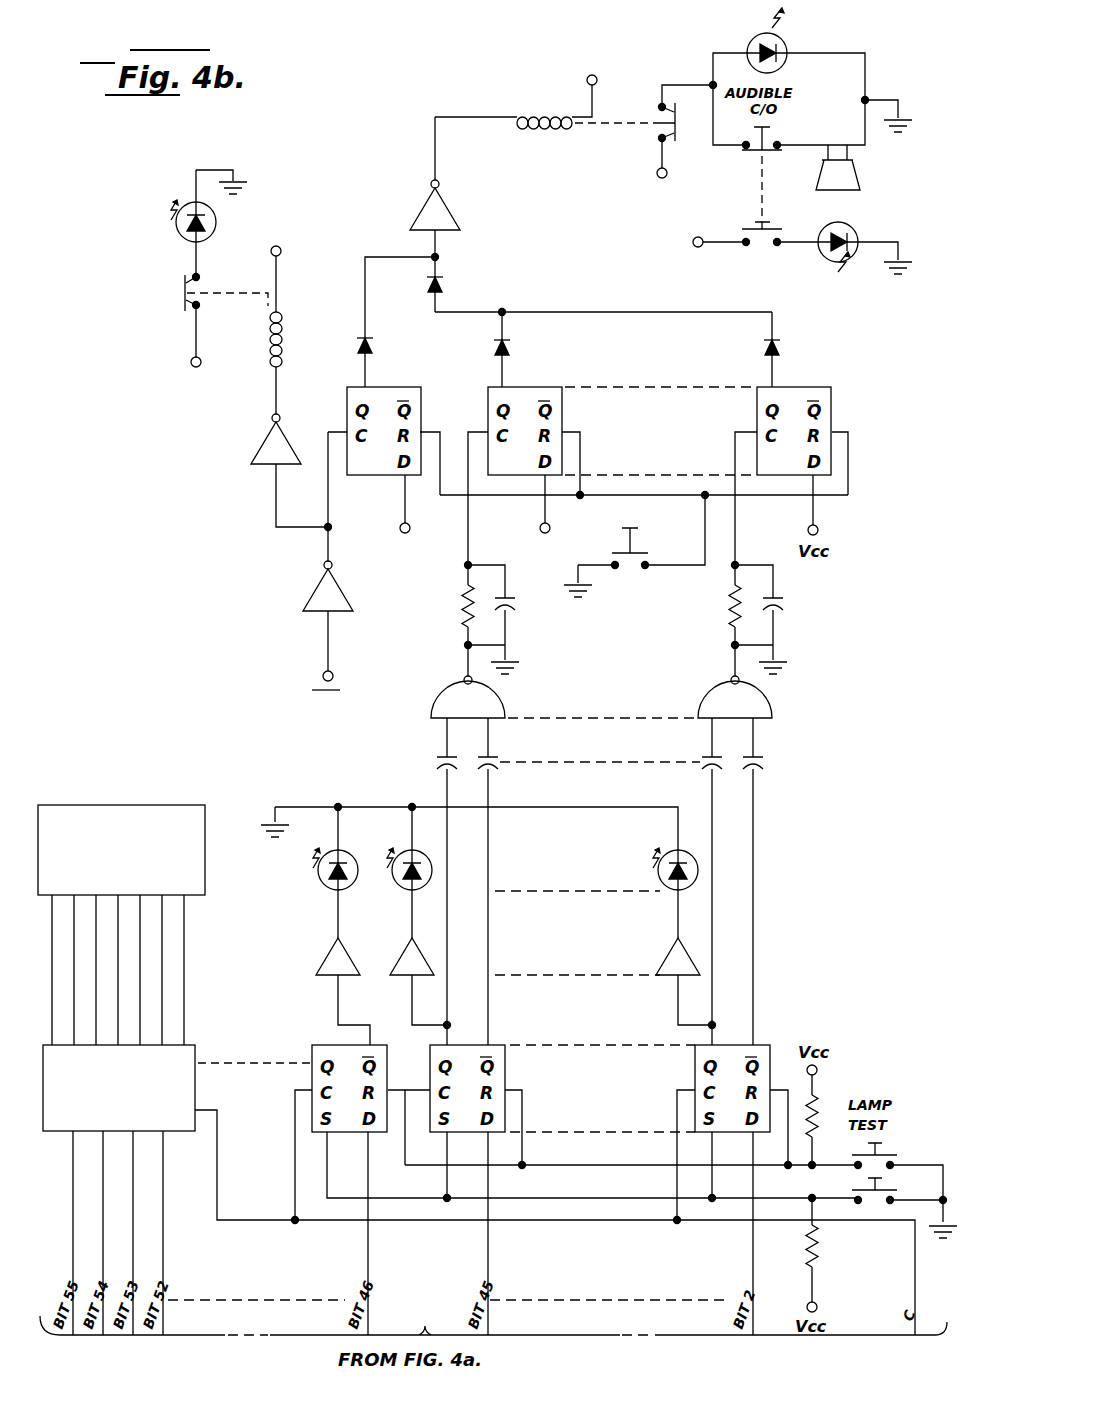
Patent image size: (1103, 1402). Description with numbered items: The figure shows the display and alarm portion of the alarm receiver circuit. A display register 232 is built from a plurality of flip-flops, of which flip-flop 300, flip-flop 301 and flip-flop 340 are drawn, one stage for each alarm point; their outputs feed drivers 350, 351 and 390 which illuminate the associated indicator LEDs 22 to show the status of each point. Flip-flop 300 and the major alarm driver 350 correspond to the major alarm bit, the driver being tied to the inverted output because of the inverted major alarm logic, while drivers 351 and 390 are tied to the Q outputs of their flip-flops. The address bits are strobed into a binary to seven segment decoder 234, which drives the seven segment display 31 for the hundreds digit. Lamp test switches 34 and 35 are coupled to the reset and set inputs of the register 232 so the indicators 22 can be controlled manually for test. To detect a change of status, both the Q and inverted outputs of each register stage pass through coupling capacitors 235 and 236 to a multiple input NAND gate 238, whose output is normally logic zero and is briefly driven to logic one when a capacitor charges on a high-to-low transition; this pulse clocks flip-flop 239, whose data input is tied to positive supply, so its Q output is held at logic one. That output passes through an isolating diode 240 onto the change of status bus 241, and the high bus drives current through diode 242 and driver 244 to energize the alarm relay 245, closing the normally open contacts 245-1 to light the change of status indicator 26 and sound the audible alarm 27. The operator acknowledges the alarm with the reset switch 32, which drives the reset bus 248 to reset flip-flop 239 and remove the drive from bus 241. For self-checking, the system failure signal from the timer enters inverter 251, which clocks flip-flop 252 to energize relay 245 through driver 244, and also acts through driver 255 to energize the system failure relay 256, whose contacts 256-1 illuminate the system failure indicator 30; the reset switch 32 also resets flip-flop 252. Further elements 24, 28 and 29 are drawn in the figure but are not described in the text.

The indicator LED 22 is at (730, 876).
The indicator light emitting diode 24 is at (311, 872).
The change of status indicator 26 is at (738, 40).
The audible alarm 27 is at (859, 167).
The audible cut-off switch 28 is at (734, 182).
The indicator LED 29 is at (865, 242).
The system failure indicator 30 is at (181, 223).
The seven segment display 31 is at (121, 904).
The reset switch 32 is at (634, 550).
The lamp test switch 34 is at (904, 1187).
The lamp test switch 35 is at (897, 1189).
The display register 232 is at (729, 1160).
The binary to seven segment decoder 234 is at (479, 1173).
The coupling capacitor 235 is at (416, 889).
The coupling capacitor 236 is at (516, 889).
The multiple input NAND gate 238 is at (445, 709).
The flip-flop 239 is at (533, 458).
The isolating diode 240 is at (462, 349).
The change of status bus 241 is at (603, 299).
The diode 242 is at (410, 288).
The driver 244 is at (413, 189).
The alarm relay 245 is at (545, 92).
The alarm relay contacts 245-1 is at (687, 142).
The reset bus 248 is at (644, 513).
The inverter 251 is at (299, 636).
The flip-flop 252 is at (400, 457).
The driver 255 is at (258, 472).
The system failure relay 256 is at (300, 319).
The system failure relay contacts 256-1 is at (173, 334).
The flip-flop 300 is at (567, 1165).
The flip-flop 301 is at (494, 1170).
The flip-flop 340 is at (692, 1088).
The driver 350 is at (307, 988).
The driver 351 is at (401, 977).
The driver 390 is at (658, 977).